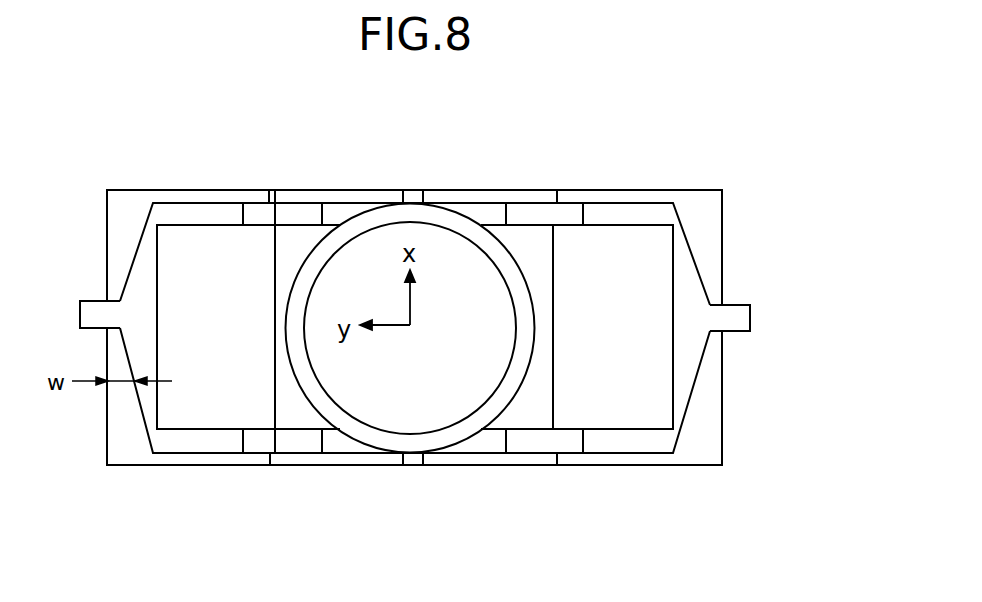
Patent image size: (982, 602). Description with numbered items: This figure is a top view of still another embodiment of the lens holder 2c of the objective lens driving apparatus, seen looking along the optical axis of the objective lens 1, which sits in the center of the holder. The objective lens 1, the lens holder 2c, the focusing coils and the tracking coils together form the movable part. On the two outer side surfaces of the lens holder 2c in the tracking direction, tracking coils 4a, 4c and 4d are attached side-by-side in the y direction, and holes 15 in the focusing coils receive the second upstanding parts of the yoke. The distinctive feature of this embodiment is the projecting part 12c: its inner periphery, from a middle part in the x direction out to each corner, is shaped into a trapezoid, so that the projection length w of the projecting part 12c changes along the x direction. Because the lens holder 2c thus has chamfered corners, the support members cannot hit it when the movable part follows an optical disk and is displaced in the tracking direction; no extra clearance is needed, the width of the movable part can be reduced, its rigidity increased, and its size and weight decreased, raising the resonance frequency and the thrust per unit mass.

The objective lens 1 is at (353, 277).
The lens holder 2c is at (213, 210).
The tracking coil 4a is at (345, 455).
The tracking coil 4c is at (330, 197).
The tracking coil 4d is at (478, 200).
The projecting part 12c is at (177, 455).
The hole 15 is at (248, 407).